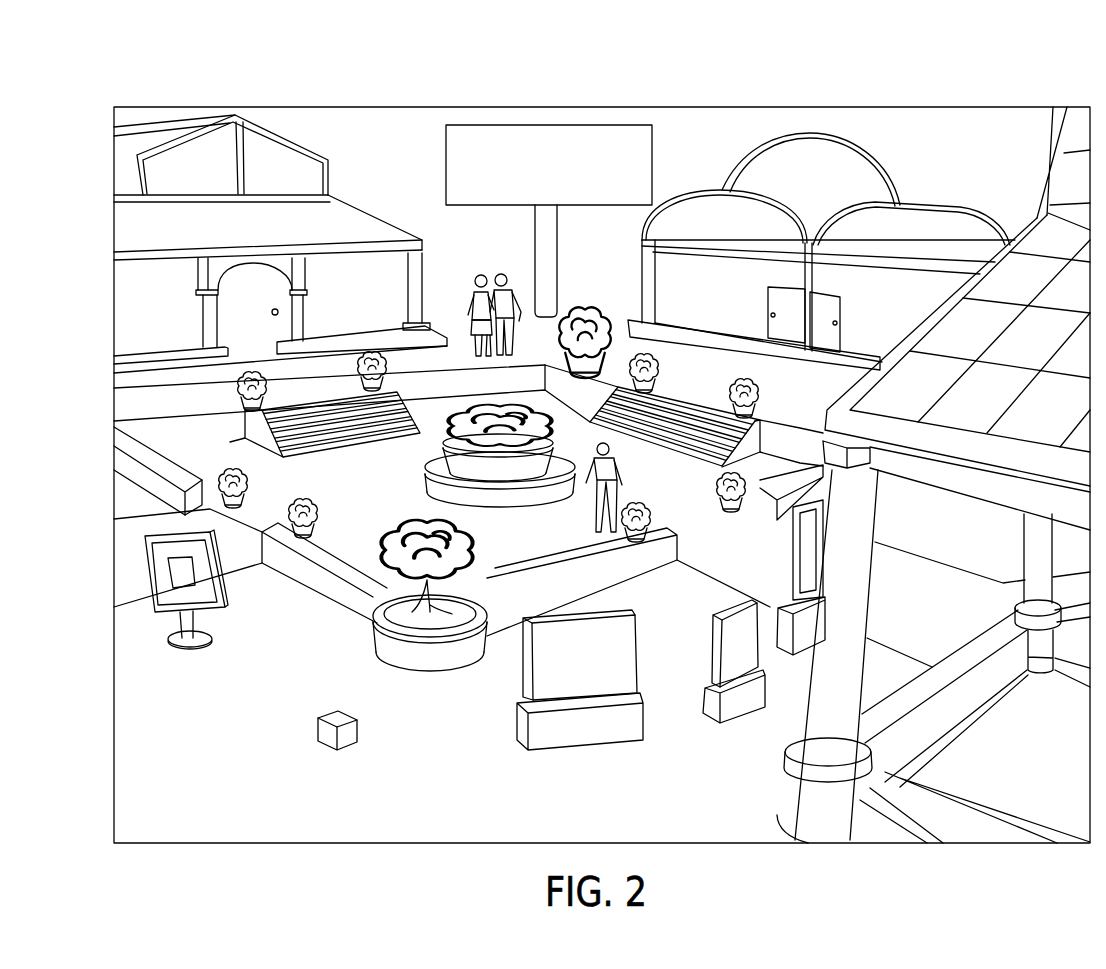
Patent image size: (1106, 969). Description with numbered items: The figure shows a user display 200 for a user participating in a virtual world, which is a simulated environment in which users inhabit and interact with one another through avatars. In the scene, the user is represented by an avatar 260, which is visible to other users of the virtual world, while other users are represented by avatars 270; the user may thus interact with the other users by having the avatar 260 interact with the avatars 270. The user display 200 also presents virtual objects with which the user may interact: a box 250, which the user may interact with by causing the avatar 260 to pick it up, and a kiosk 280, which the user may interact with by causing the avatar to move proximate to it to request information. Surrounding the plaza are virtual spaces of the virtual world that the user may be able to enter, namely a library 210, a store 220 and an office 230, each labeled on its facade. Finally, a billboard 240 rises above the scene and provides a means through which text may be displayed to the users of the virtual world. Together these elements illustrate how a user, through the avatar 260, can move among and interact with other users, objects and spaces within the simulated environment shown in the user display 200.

The user display 200 is at (126, 72).
The library 210 is at (302, 147).
The store 220 is at (767, 192).
The office 230 is at (934, 203).
The billboard 240 is at (652, 150).
The box 250 is at (280, 733).
The avatar 260 is at (617, 455).
The avatars 270 is at (461, 274).
The kiosk 280 is at (246, 588).